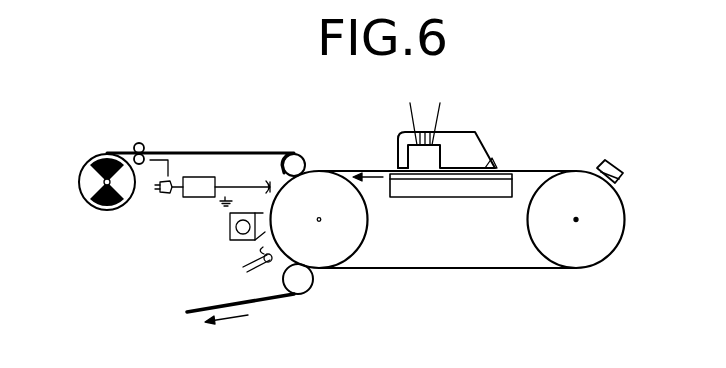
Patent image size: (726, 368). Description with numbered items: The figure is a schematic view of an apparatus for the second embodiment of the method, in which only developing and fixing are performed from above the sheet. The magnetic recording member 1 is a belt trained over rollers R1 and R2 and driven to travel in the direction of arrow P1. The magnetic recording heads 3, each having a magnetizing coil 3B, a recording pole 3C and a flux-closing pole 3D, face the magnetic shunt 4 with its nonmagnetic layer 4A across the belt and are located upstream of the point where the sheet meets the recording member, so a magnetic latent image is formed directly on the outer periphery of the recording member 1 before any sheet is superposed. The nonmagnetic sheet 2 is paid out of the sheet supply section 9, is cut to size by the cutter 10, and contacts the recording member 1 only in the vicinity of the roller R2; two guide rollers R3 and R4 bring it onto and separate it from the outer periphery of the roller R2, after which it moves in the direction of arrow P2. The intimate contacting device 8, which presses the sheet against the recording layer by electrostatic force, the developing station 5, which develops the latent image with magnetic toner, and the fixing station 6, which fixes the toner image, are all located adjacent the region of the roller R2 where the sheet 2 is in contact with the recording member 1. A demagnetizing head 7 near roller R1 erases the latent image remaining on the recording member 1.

The magnetic recording member 1 is at (490, 268).
The nonmagnetic sheet 2 is at (212, 152).
The magnetic recording heads 3 is at (449, 128).
The magnetizing coil 3B is at (410, 113).
The recording pole 3C is at (398, 168).
The flux-closing pole 3D is at (494, 166).
The magnetic shunt 4 is at (451, 217).
The nonmagnetic layer 4A is at (486, 188).
The developing station 5 is at (230, 226).
The fixing station 6 is at (243, 267).
The demagnetizing head 7 is at (616, 167).
The intimate contacting device 8 is at (273, 178).
The sheet supply section 9 is at (78, 190).
The cutter 10 is at (167, 142).
The roller R1 is at (585, 265).
The roller R2 is at (329, 265).
The guide roller R3 is at (291, 154).
The guide roller R4 is at (298, 296).
The arrow P1 is at (373, 188).
The arrow P2 is at (227, 332).